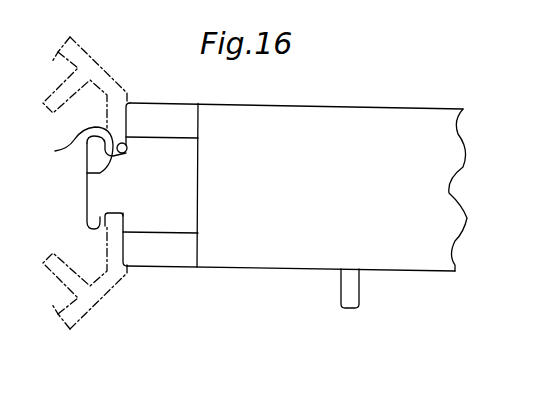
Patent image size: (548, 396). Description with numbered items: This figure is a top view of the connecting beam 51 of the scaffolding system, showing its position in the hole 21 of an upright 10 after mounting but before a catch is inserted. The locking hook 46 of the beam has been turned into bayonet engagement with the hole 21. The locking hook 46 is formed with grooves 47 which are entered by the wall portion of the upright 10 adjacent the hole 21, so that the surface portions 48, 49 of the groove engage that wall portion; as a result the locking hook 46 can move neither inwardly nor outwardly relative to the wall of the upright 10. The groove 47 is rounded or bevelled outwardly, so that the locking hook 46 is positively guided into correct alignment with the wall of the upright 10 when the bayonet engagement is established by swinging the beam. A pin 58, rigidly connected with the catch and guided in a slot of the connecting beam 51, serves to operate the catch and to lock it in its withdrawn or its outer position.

The upright 10 is at (88, 311).
The hole 21 is at (112, 215).
The locking hook 46 is at (153, 146).
The grooves 47 is at (87, 173).
The surface portion 48 is at (57, 151).
The surface portion 49 is at (124, 152).
The connecting beam 51 is at (310, 108).
The pin 58 is at (346, 289).